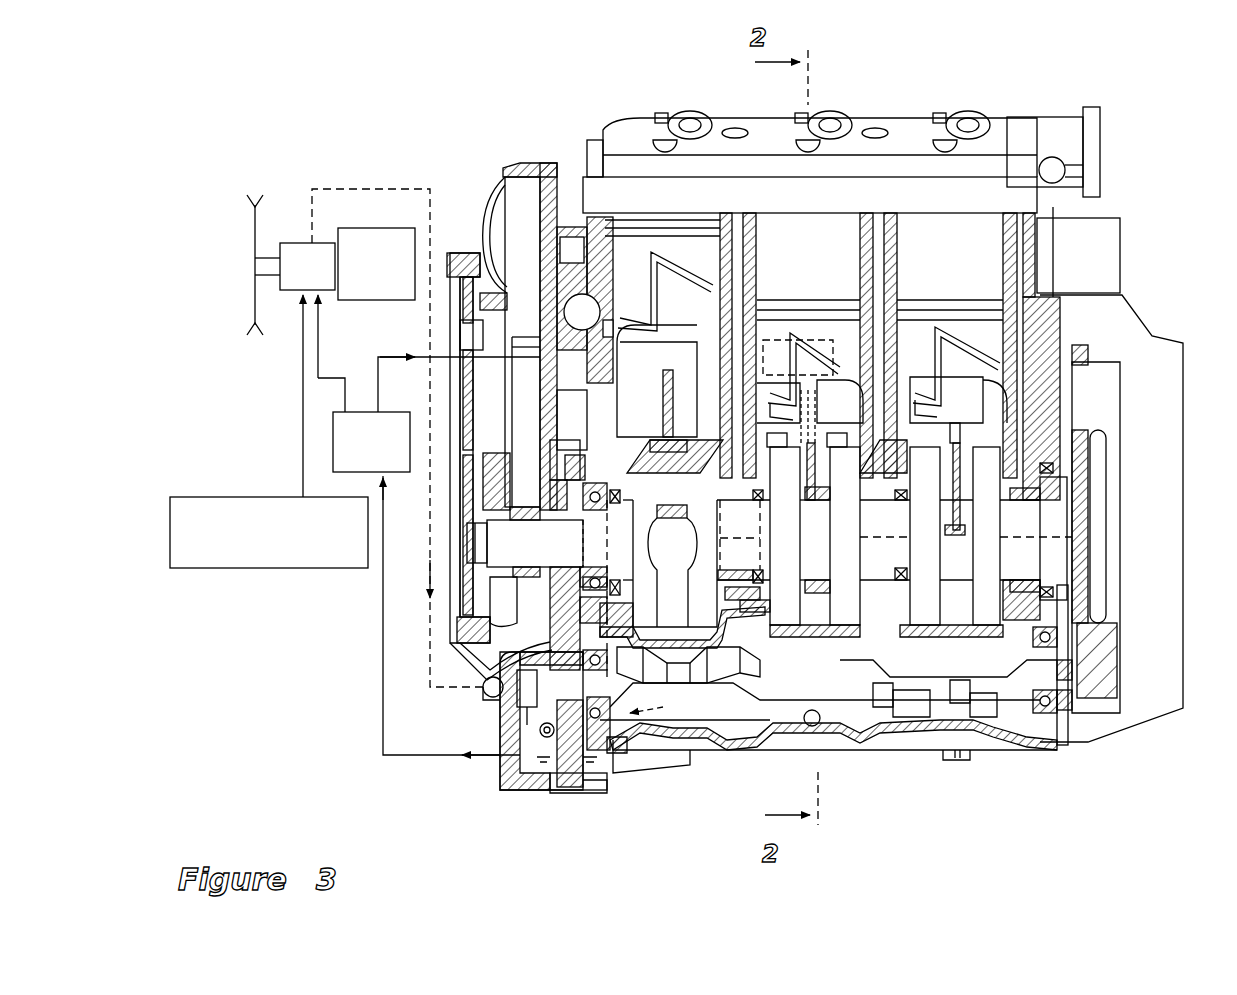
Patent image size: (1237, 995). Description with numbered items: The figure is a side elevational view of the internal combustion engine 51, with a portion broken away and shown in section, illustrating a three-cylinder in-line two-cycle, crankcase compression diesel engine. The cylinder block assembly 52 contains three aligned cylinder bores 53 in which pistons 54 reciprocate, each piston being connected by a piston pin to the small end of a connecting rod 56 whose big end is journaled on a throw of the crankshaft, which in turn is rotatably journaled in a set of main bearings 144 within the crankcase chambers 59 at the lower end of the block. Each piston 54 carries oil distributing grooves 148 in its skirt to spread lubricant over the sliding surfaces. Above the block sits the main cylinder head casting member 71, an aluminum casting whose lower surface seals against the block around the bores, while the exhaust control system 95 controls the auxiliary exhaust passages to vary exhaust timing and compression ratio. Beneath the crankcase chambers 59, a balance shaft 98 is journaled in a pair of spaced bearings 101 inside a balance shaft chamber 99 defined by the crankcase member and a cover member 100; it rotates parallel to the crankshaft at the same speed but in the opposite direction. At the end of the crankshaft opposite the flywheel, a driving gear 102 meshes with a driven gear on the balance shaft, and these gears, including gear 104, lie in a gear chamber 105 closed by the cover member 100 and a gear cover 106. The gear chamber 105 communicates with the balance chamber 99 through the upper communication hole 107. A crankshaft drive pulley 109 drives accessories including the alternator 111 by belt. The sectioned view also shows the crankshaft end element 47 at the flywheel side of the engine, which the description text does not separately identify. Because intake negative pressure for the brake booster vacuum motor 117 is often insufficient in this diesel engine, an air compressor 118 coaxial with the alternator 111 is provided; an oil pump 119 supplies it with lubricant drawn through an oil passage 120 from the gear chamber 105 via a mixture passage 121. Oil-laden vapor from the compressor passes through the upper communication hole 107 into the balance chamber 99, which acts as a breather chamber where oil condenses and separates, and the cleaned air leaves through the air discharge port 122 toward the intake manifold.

The internal combustion engine 51 is at (1168, 141).
The main cylinder head casting member 71 is at (918, 120).
The piston 54 is at (712, 212).
The cylinder bore 53 is at (840, 228).
The exhaust control system 95 is at (1122, 252).
The oil distributing groove 148 is at (778, 356).
The connecting rod 56 is at (670, 420).
The driving gear 102 is at (590, 470).
The upper communication hole 107 is at (627, 567).
The crankshaft 47 is at (1030, 517).
The main bearing 144 is at (1020, 493).
The cylinder block assembly 52 is at (1082, 406).
The crankcase chamber 59 is at (962, 627).
The balance shaft 98 is at (725, 700).
The balance shaft chamber 99 is at (882, 740).
The air discharge port 122 is at (820, 727).
The cover member 100 is at (985, 740).
The bearing 101 is at (1063, 710).
The crankshaft drive pulley 109 is at (622, 755).
The gear 104 is at (575, 770).
The gear chamber 105 is at (513, 712).
The gear cover 106 is at (490, 780).
The brake booster vacuum motor 117 is at (215, 497).
The air compressor 118 is at (295, 243).
The alternator 111 is at (385, 228).
The oil pump 119 is at (358, 412).
The oil passage 120 is at (383, 632).
The mixture passage 121 is at (430, 492).